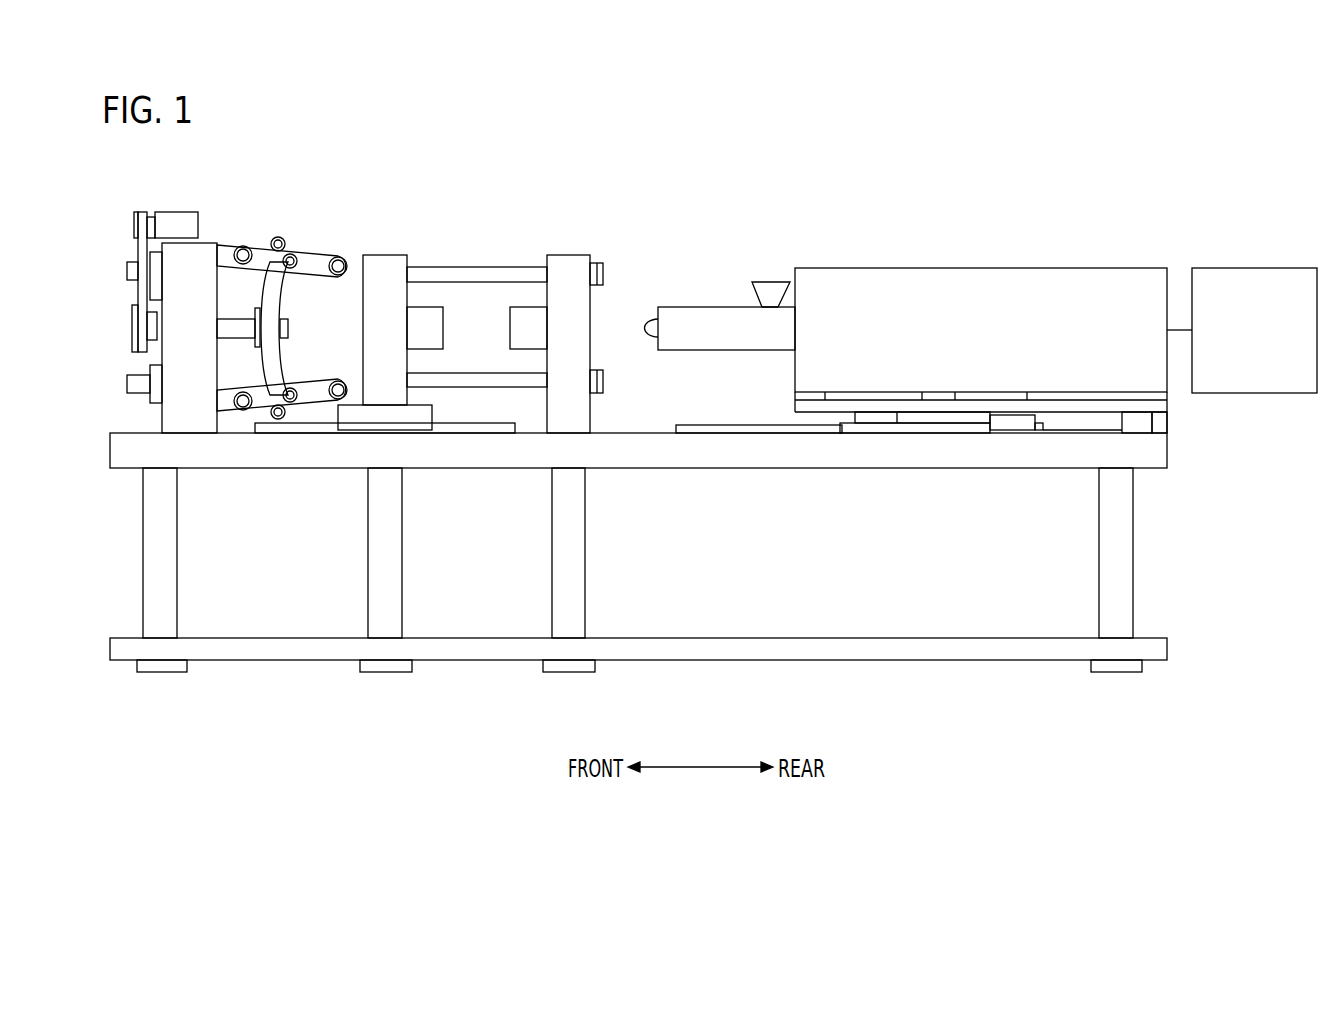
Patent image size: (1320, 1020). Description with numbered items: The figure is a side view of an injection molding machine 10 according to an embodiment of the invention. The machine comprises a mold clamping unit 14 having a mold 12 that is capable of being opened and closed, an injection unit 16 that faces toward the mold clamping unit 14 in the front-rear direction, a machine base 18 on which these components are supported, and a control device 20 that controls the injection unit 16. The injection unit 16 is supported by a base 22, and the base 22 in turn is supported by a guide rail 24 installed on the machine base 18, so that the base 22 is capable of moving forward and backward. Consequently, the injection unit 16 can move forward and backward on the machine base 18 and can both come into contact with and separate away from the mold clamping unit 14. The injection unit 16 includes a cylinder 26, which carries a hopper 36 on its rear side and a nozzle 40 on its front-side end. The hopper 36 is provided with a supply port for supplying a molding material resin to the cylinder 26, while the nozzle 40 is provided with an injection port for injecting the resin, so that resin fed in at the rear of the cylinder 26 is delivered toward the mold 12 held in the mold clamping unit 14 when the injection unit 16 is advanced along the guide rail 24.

The injection molding machine 10 is at (323, 156).
The mold 12 is at (440, 330).
The mold clamping unit 14 is at (382, 254).
The injection unit 16 is at (1043, 267).
The machine base 18 is at (121, 416).
The control device 20 is at (1275, 267).
The base 22 is at (1160, 407).
The guide rail 24 is at (730, 425).
The cylinder 26 is at (693, 305).
The hopper 36 is at (765, 281).
The nozzle 40 is at (645, 328).